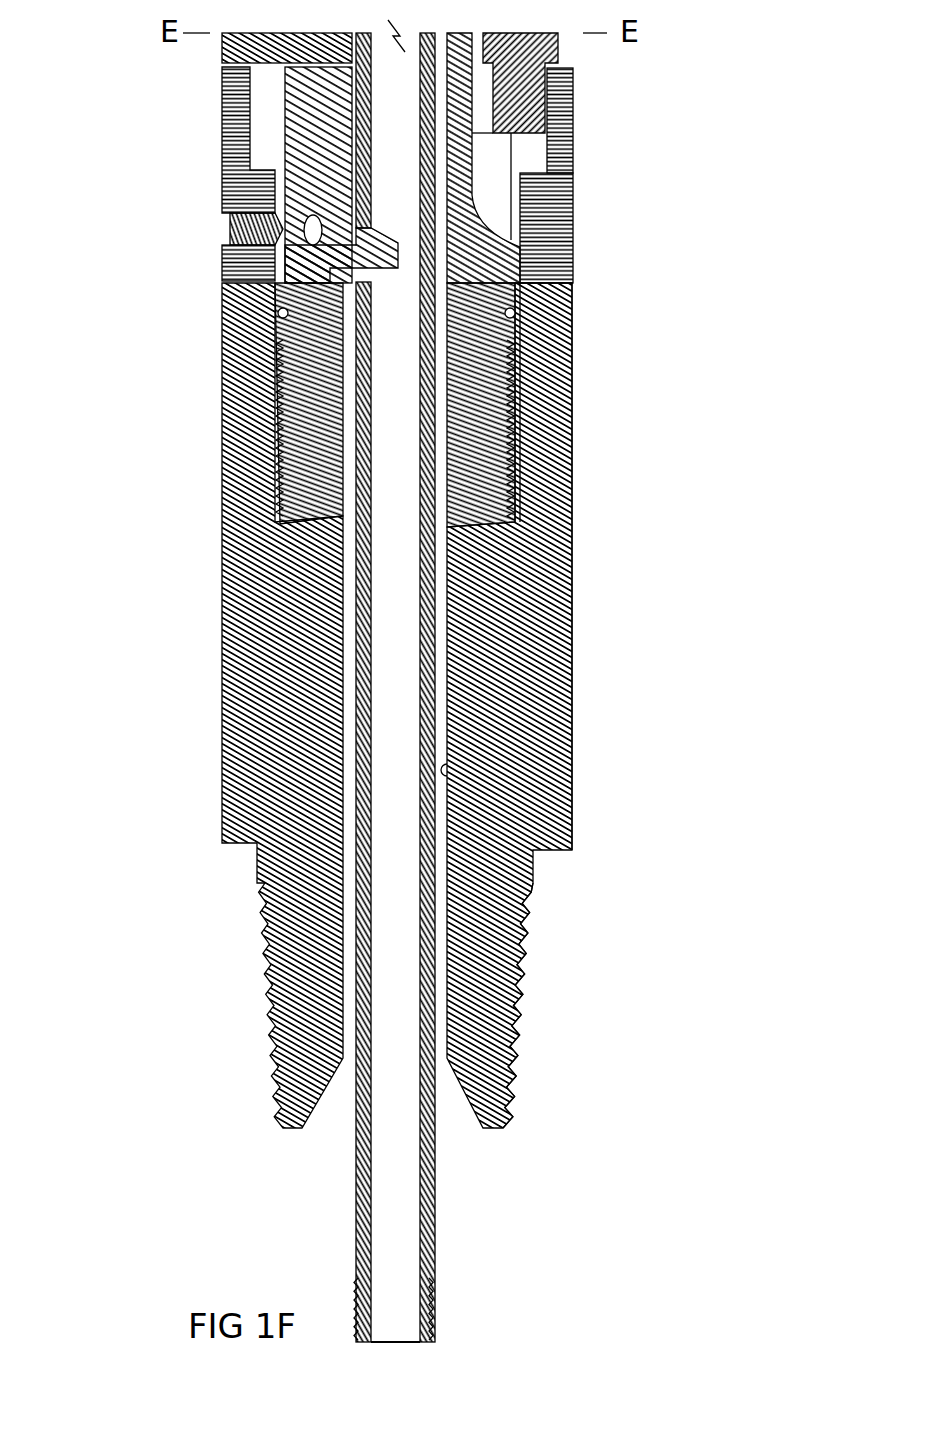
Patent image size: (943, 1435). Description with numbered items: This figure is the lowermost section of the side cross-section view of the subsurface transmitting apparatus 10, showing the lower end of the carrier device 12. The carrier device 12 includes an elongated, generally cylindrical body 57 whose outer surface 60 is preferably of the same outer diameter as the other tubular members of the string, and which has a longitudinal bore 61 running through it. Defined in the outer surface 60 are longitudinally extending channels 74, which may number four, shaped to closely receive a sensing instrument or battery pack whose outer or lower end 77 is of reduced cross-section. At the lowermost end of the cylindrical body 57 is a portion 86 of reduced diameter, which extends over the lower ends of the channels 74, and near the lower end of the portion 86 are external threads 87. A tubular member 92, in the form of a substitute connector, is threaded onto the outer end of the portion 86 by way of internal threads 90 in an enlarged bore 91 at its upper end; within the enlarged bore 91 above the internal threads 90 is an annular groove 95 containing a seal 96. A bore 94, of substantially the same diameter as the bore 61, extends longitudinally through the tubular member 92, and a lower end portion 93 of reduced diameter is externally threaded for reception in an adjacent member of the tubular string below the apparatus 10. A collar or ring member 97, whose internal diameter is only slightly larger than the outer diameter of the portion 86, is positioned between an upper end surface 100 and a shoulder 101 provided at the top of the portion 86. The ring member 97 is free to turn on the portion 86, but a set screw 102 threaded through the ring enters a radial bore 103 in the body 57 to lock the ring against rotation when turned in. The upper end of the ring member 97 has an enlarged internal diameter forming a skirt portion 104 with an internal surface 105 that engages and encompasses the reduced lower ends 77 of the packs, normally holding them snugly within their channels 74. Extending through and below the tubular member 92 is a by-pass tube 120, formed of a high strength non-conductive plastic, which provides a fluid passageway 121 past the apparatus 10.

The subsurface transmitting apparatus 10 is at (402, 705).
The carrier device 12 is at (610, 289).
The cylindrical body 57 is at (203, 45).
The outer surface 60 is at (352, 58).
The longitudinal bore 61 is at (345, 67).
The channels 74 is at (573, 47).
The lower end 77 is at (573, 165).
The portion of reduced diameter 86 is at (283, 300).
The external threads 87 is at (262, 483).
The internal threads 90 is at (515, 486).
The enlarged bore 91 is at (520, 495).
The tubular member 92 is at (572, 580).
The lower end portion 93 is at (520, 1040).
The bore 94 is at (450, 795).
The annular groove 95 is at (514, 320).
The seal 96 is at (283, 318).
The ring member 97 is at (573, 263).
The upper end surface 100 is at (568, 303).
The shoulder 101 is at (573, 92).
The set screw 102 is at (275, 233).
The radial bore 103 is at (225, 259).
The skirt portion 104 is at (573, 218).
The internal surface 105 is at (573, 125).
The by-pass tube 120 is at (437, 720).
The fluid passageway 121 is at (405, 830).